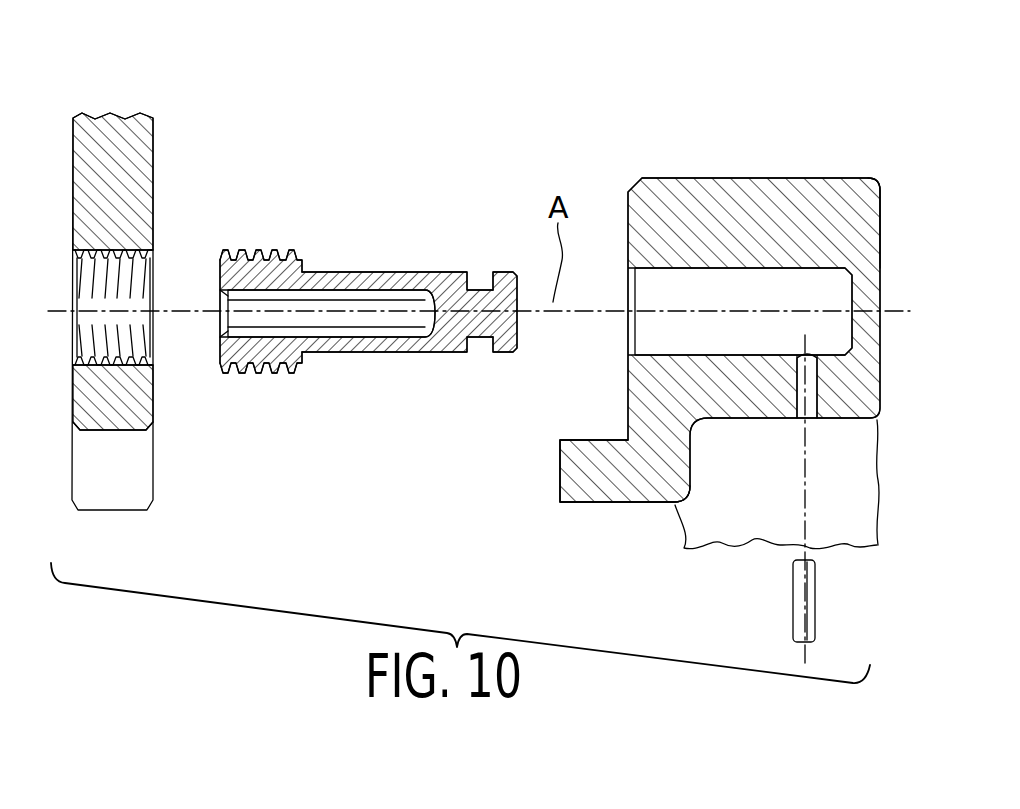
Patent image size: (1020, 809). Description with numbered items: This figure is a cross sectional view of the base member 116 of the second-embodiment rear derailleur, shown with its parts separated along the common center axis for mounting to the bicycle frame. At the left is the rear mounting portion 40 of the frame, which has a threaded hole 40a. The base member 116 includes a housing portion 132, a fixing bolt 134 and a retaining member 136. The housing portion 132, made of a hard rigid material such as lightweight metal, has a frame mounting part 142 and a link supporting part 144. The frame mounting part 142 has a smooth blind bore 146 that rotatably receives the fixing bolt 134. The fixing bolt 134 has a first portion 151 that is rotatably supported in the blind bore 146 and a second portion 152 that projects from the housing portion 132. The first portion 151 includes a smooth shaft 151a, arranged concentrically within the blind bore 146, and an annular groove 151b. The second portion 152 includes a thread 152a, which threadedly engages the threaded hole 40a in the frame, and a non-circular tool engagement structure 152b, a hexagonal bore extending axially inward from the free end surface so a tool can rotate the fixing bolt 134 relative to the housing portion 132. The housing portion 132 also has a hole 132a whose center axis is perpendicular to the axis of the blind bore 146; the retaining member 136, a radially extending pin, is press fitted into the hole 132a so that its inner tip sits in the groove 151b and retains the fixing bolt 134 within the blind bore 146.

The rear mounting portion 40 is at (159, 295).
The threaded hole 40a is at (130, 273).
The fixing bolt 134 is at (347, 351).
The second portion 152 is at (305, 394).
The thread 152a is at (276, 373).
The non-circular tool engagement structure 152b is at (222, 318).
The first portion 151 is at (411, 392).
The smooth shaft 151a is at (403, 353).
The annular groove 151b is at (480, 353).
The base member 116 is at (722, 342).
The housing portion 132 is at (722, 176).
The frame mounting part 142 is at (818, 177).
The blind bore 146 is at (663, 268).
The hole 132a is at (812, 395).
The link supporting part 144 is at (678, 506).
The retaining member 136 is at (791, 618).